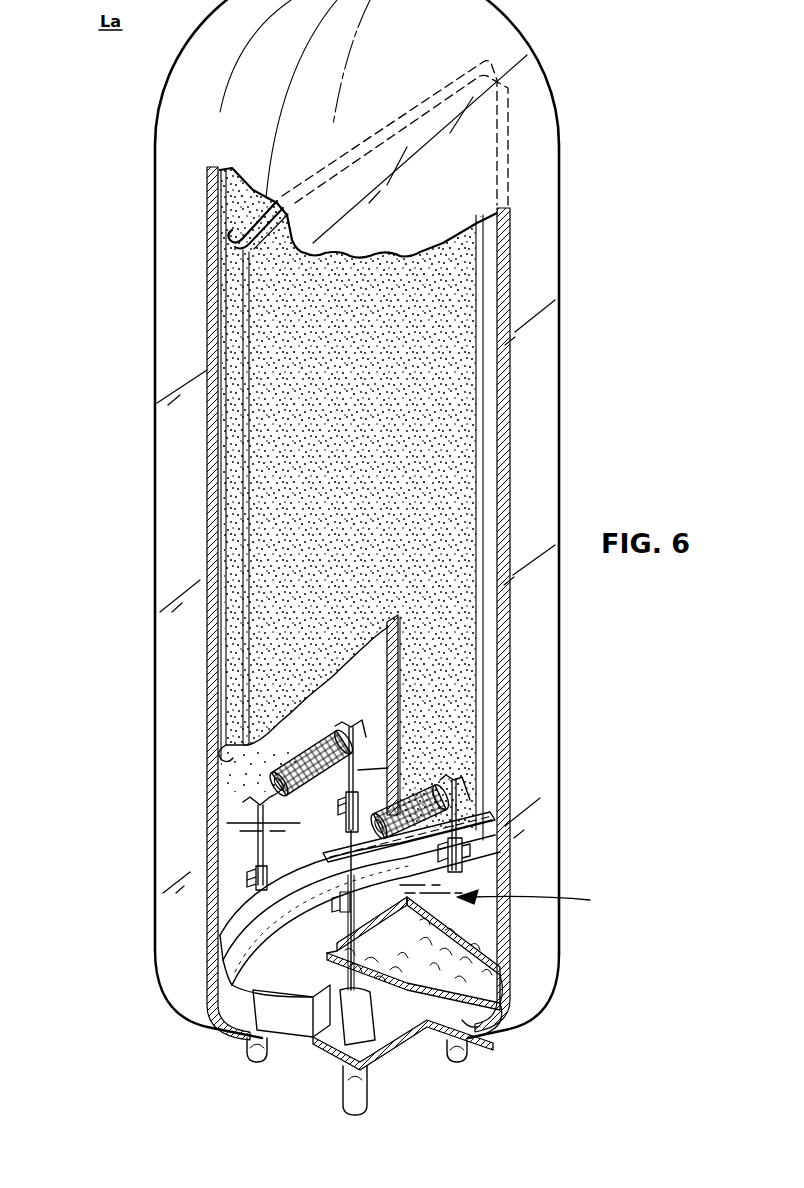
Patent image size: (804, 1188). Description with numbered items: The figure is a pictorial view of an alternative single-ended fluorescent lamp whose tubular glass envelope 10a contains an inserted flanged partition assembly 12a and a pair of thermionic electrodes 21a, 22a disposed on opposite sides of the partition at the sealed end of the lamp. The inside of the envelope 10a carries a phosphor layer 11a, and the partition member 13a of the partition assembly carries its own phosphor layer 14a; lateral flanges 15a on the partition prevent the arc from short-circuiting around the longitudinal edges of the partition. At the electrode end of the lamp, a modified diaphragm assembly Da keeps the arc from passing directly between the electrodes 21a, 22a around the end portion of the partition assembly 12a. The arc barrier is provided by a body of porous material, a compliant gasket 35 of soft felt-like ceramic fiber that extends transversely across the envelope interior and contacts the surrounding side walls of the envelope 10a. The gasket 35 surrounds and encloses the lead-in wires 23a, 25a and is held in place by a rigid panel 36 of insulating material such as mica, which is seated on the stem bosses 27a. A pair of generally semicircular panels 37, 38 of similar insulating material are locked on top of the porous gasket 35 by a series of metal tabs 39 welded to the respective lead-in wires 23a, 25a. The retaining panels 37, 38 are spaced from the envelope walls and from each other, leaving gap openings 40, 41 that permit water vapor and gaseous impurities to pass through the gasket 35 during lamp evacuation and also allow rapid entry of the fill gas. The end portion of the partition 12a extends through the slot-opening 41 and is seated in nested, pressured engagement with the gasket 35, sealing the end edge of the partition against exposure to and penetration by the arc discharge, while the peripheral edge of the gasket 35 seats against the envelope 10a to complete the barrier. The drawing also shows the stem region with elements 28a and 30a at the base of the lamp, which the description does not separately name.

The tubular glass envelope 10a is at (188, 115).
The lateral flanges 15a is at (528, 48).
The flanged partition assembly 12a is at (460, 263).
The partition member 13a is at (252, 230).
The phosphor layer 14a is at (210, 250).
The phosphor layer 11a is at (233, 770).
The thermionic electrode 21a is at (327, 741).
The thermionic electrode 22a is at (405, 803).
The lead-in wires 23a is at (347, 802).
The metal tabs 39 is at (232, 833).
The slot-opening 41 is at (460, 830).
The lead-in wires 25a is at (500, 838).
The semicircular panel 37 is at (513, 928).
The modified diaphragm assembly Da is at (505, 898).
The compliant gasket 35 is at (513, 973).
The rigid panel 36 is at (463, 990).
The semicircular panel 38 is at (230, 925).
The gap opening 40 is at (300, 1000).
The stem bosses 27a is at (360, 1020).
The lower plate 28a is at (393, 1017).
The legs 30a is at (247, 1053).